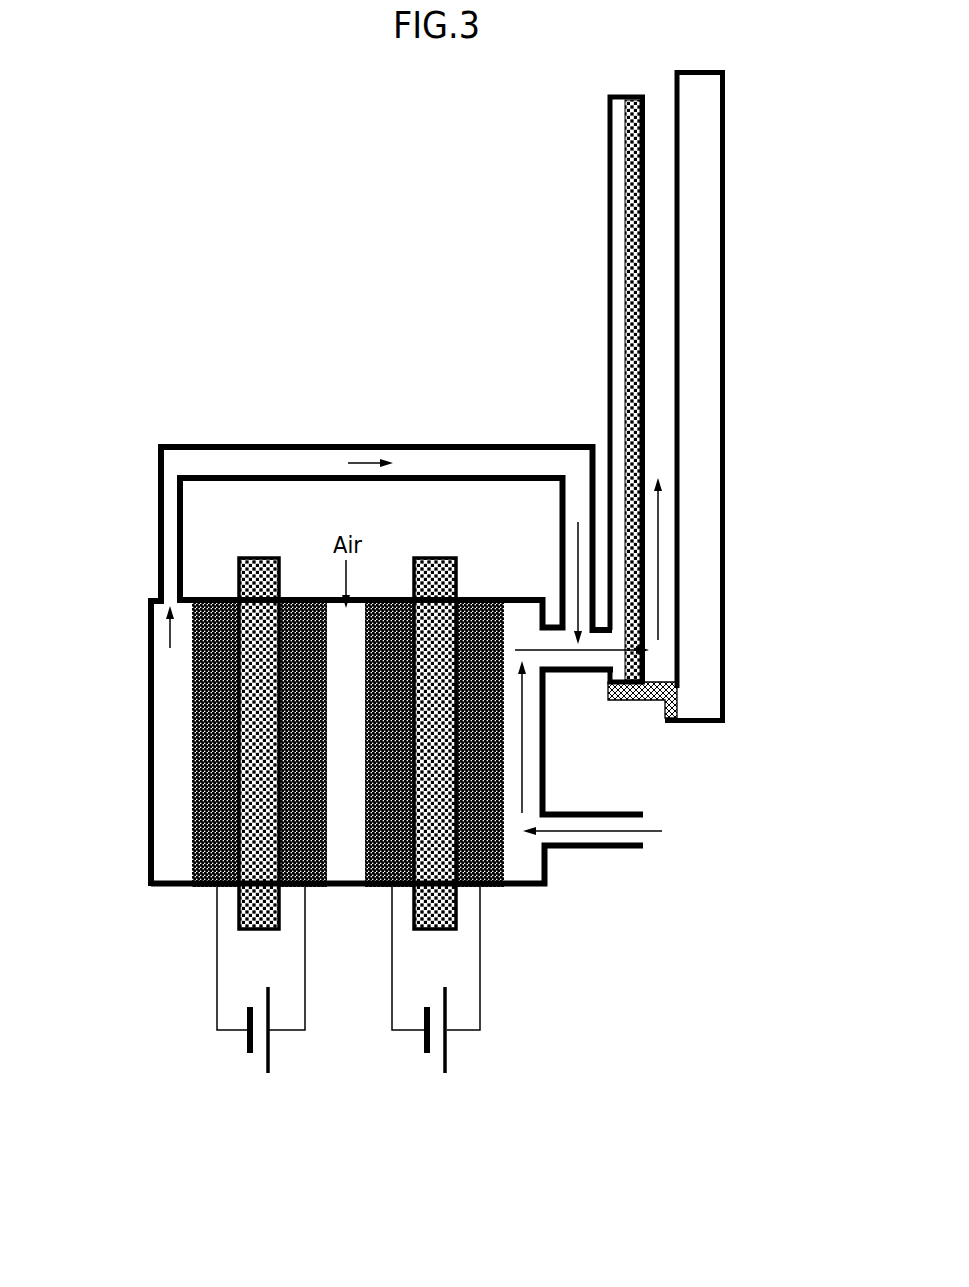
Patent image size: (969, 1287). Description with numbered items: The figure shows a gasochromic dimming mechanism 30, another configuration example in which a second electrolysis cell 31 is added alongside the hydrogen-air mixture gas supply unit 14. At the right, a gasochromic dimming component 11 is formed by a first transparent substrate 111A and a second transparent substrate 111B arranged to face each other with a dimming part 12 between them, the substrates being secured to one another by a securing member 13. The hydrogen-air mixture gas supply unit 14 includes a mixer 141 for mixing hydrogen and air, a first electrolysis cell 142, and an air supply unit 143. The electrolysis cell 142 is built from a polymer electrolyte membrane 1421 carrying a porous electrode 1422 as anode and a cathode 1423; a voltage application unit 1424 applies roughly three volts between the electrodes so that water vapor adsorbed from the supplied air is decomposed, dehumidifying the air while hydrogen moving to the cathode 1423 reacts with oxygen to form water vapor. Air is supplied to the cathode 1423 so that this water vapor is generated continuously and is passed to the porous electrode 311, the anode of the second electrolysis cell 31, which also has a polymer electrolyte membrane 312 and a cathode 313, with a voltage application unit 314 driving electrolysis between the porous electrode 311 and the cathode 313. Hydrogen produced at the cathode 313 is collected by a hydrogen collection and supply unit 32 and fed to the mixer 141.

The gasochromic dimming mechanism 30 is at (72, 100).
The gasochromic dimming component 11 is at (724, 397).
The first transparent substrate 111A is at (712, 118).
The second transparent substrate 111B is at (615, 163).
The dimming part 12 is at (635, 208).
The securing member 13 is at (672, 697).
The hydrogen-air mixture gas supply unit 14 is at (479, 796).
The mixer 141 is at (588, 690).
The electrolysis cell 142 is at (594, 864).
The air supply unit 143 is at (498, 900).
The polymer electrolyte membrane 1421 is at (430, 558).
The porous electrode 1422 is at (479, 599).
The cathode 1423 is at (386, 599).
The voltage application unit 1424 is at (427, 1093).
The second electrolysis cell 31 is at (187, 815).
The porous electrode 311 is at (302, 704).
The polymer electrolyte membrane 312 is at (260, 730).
The cathode 313 is at (208, 754).
The voltage application unit 314 is at (247, 1045).
The hydrogen collection and supply unit 32 is at (148, 601).